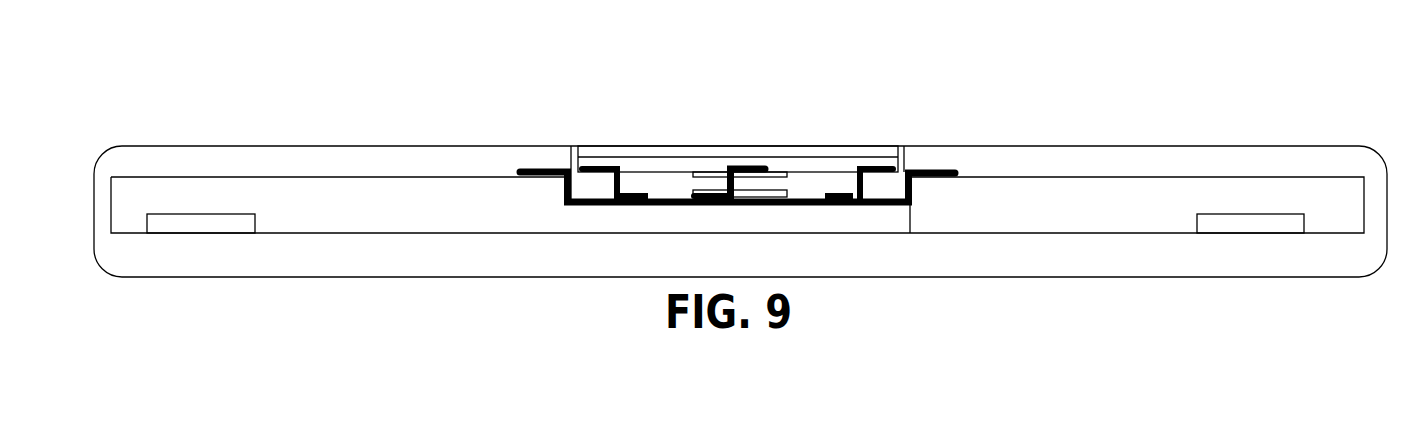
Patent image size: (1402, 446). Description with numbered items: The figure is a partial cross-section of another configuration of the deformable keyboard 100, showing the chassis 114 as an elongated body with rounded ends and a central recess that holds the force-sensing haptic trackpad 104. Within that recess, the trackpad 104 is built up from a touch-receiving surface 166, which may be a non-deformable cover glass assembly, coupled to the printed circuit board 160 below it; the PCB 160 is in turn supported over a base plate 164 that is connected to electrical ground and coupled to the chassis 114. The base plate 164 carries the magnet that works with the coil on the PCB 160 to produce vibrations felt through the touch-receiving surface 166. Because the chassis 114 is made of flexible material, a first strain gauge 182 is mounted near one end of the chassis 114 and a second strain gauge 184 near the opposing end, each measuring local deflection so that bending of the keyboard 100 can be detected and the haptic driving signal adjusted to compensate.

The deformable keyboard 100 is at (138, 100).
The force-sensing haptic trackpad 104 is at (603, 93).
The chassis 114 is at (95, 202).
The printed circuit board 160 is at (716, 166).
The base plate 164 is at (589, 200).
The touch-receiving surface 166 is at (851, 146).
The first strain gauge 182 is at (202, 214).
The second strain gauge 184 is at (1249, 214).